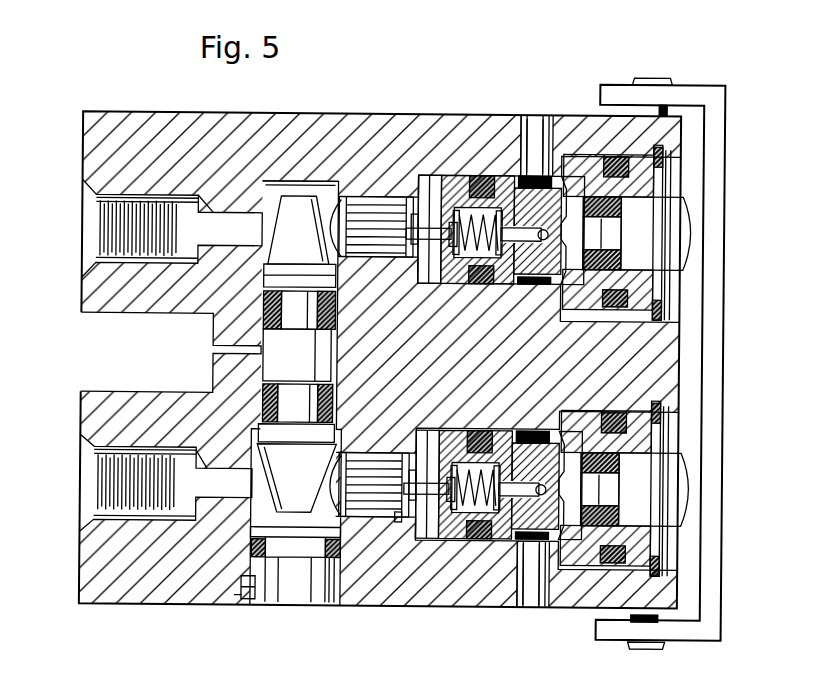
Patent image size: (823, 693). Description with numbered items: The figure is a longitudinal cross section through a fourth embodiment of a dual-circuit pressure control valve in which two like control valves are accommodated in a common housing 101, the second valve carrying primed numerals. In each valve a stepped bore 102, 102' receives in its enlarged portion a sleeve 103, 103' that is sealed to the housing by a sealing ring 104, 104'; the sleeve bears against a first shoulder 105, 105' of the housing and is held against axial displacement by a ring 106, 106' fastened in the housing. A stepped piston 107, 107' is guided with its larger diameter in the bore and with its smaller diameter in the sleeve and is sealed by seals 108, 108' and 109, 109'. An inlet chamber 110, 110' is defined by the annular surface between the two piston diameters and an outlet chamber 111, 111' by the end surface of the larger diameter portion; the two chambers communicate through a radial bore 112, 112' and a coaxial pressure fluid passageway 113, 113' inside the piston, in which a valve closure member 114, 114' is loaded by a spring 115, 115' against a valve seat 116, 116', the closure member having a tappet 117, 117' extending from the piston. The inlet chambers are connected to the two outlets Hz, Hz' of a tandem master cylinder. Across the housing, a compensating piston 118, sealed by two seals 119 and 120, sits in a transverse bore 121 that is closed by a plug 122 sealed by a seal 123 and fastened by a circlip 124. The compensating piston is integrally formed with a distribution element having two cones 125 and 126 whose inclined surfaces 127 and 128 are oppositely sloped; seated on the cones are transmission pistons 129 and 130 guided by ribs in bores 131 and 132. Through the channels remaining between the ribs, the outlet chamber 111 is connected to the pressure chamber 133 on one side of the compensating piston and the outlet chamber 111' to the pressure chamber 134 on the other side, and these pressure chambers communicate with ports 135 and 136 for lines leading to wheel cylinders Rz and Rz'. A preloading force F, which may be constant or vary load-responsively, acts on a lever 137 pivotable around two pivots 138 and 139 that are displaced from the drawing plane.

The housing 101 is at (150, 130).
The stepped bore 102 is at (485, 537).
The stepped bore 102' is at (490, 163).
The sleeve 103 is at (706, 491).
The sleeve 103' is at (712, 235).
The sealing ring 104 is at (629, 544).
The sealing ring 104' is at (634, 178).
The first shoulder 105 is at (601, 527).
The first shoulder 105' is at (608, 174).
The ring 106 is at (711, 495).
The ring 106' is at (714, 224).
The stepped piston 107 is at (523, 592).
The stepped piston 107' is at (524, 111).
The seal 108 is at (503, 538).
The seal 108' is at (512, 177).
The seal 109 is at (635, 490).
The seal 109' is at (637, 234).
The inlet chamber 110 is at (544, 609).
The inlet chamber 110' is at (553, 128).
The outlet chamber 111 is at (391, 536).
The outlet chamber 111' is at (400, 163).
The radial bore 112 is at (632, 490).
The radial bore 112' is at (634, 234).
The coaxial pressure fluid passageway 113 is at (514, 444).
The coaxial pressure fluid passageway 113' is at (524, 282).
The valve closure member 114 is at (470, 450).
The valve closure member 114' is at (477, 266).
The spring 115 is at (552, 465).
The spring 115' is at (566, 256).
The valve seat 116 is at (429, 445).
The valve seat 116' is at (431, 272).
The tappet 117 is at (390, 460).
The tappet 117' is at (402, 257).
The compensating piston 118 is at (270, 271).
The seal 119 is at (262, 322).
The seal 120 is at (258, 383).
The transverse bore 121 is at (258, 196).
The plug 122 is at (286, 572).
The seal 123 is at (242, 600).
The circlip 124 is at (239, 601).
The cone 125 is at (290, 196).
The cone 126 is at (290, 487).
The inclined surface 127 is at (260, 230).
The inclined surface 128 is at (251, 490).
The transmission piston 129 is at (362, 205).
The transmission piston 130 is at (364, 502).
The bore 131 is at (326, 233).
The bore 132 is at (400, 523).
The pressure chamber 133 is at (318, 577).
The pressure chamber 134 is at (323, 180).
The port 135 is at (130, 472).
The port 136 is at (97, 197).
The lever 137 is at (718, 285).
The pivot 138 is at (665, 80).
The pivot 139 is at (667, 648).
The outlet of tandem master cylinder Hz is at (500, 660).
The outlet of tandem master cylinder Hz' is at (556, 62).
The wheel cylinder Rz is at (102, 485).
The wheel cylinder Rz' is at (55, 231).
The preloading force F is at (727, 358).